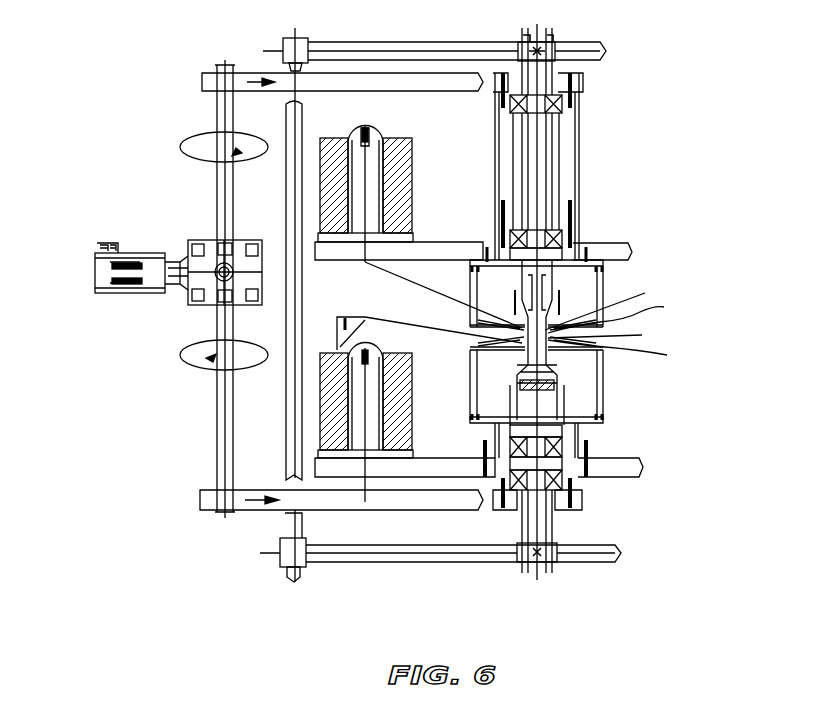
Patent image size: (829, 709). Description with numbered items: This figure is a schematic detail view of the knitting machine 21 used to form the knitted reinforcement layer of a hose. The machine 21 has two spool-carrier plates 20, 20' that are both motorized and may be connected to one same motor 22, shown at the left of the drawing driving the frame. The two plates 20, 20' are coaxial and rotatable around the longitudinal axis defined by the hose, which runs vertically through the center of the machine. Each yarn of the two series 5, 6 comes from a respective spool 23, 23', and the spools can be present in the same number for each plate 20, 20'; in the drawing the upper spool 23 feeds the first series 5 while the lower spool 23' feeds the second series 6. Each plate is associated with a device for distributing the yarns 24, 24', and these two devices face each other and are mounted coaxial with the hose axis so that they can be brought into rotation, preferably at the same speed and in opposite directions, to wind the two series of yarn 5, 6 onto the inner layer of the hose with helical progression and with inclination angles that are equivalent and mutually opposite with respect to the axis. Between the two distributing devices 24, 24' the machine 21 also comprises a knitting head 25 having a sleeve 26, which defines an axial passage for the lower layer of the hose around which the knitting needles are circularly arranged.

The yarn series 5 is at (385, 266).
The yarn series 6 is at (438, 340).
The spool-carrier plate 20 is at (609, 222).
The spool-carrier plate 20' is at (649, 470).
The knitting machine 21 is at (698, 186).
The motor 22 is at (131, 258).
The spool 23 is at (390, 194).
The spool 23' is at (321, 423).
The yarn distributing device 24 is at (583, 291).
The yarn distributing device 24' is at (579, 381).
The knitting head 25 is at (629, 350).
The sleeve 26 is at (621, 309).